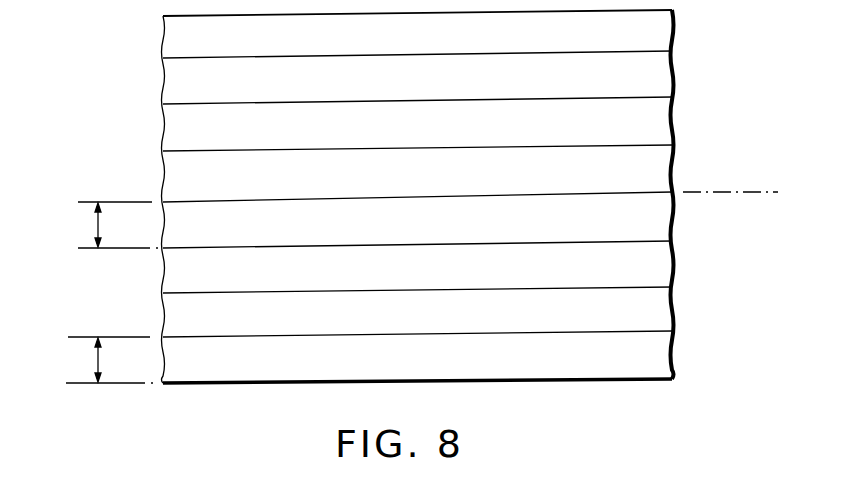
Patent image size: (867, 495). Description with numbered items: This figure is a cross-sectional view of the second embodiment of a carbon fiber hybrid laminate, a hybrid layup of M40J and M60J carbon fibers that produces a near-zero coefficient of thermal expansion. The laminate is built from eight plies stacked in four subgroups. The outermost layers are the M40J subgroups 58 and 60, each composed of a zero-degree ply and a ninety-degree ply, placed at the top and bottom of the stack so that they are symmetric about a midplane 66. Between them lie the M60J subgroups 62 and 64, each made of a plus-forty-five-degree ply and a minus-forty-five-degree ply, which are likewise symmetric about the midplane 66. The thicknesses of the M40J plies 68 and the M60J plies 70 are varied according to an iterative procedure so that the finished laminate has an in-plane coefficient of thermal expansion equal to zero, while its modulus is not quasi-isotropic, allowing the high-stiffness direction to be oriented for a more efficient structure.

The M40J subgroup 58 is at (683, 10).
The M60J subgroup 62 is at (683, 98).
The M60J subgroup 64 is at (683, 198).
The M40J subgroup 60 is at (683, 288).
The midplane 66 is at (772, 192).
The M60J plies 70 is at (102, 227).
The M40J plies 68 is at (92, 362).